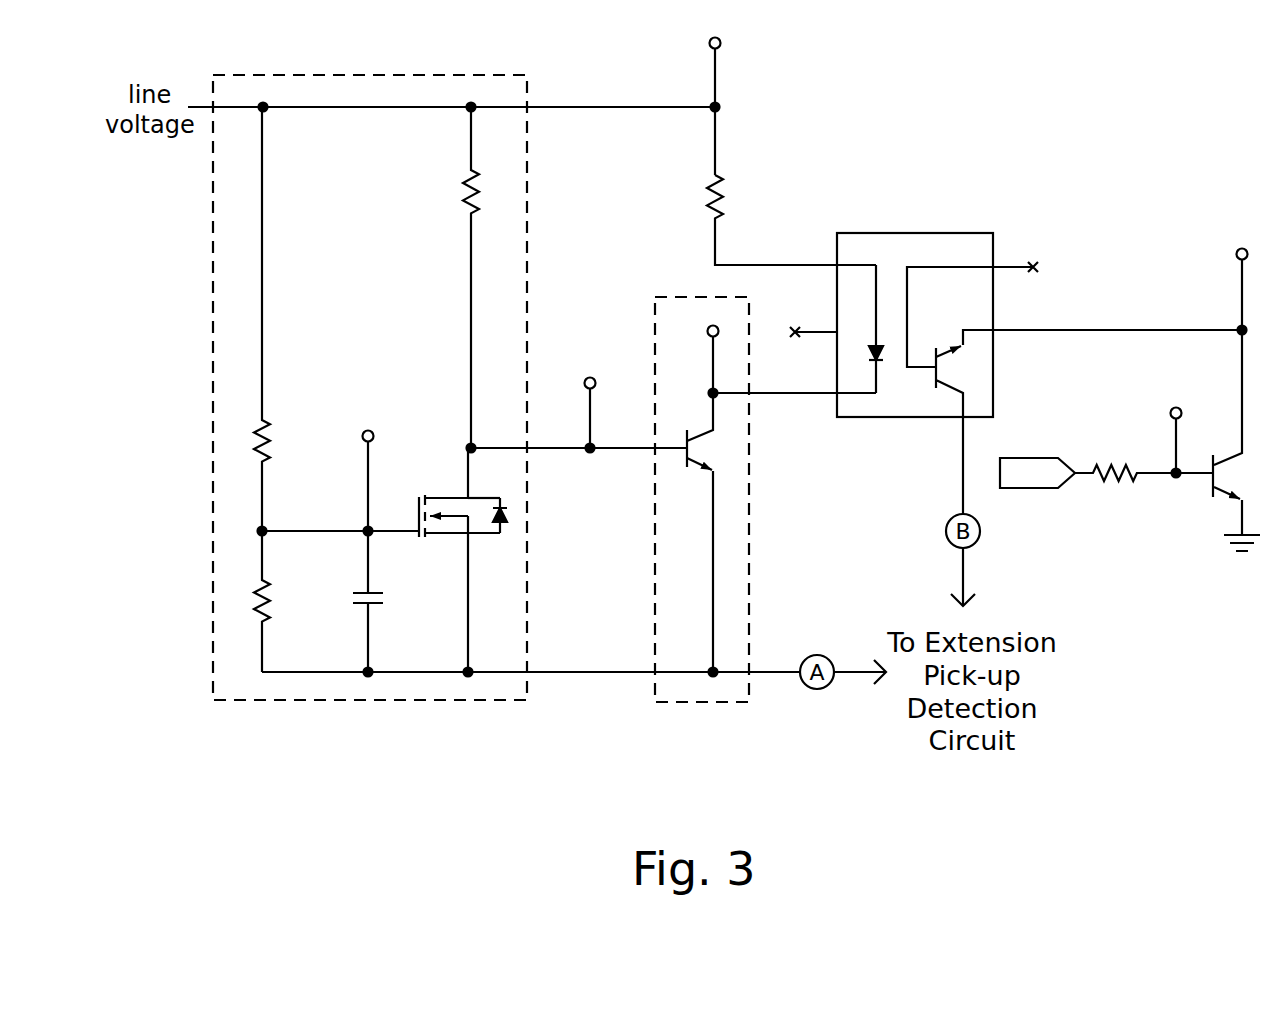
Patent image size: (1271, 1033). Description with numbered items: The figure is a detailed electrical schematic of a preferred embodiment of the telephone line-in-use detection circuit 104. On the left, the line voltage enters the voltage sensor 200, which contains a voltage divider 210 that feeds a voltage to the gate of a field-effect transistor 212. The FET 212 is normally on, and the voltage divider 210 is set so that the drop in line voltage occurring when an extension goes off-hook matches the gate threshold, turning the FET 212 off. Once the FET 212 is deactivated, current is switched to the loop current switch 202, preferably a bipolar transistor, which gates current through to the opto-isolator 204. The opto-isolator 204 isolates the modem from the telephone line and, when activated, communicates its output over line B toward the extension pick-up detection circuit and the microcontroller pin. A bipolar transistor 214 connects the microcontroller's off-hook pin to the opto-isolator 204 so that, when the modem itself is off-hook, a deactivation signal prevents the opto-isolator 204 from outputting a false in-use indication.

The telephone line-in-use detection circuit 104 is at (833, 135).
The voltage sensor 200 is at (365, 702).
The loop current switch 202 is at (692, 703).
The opto-isolator 204 is at (917, 418).
The voltage divider 210 is at (236, 546).
The field-effect transistor (FET) 212 is at (502, 566).
The bipolar transistor 214 is at (1199, 521).